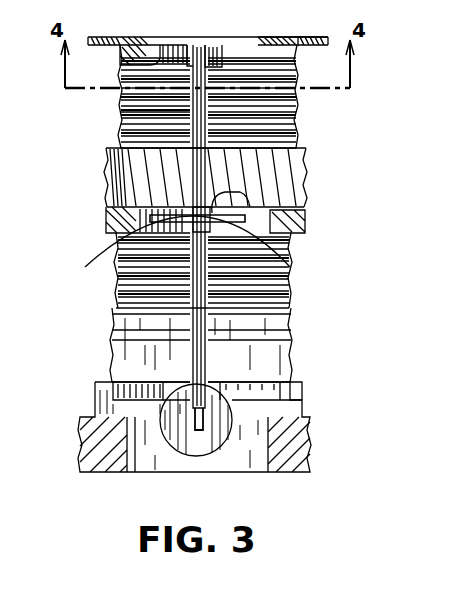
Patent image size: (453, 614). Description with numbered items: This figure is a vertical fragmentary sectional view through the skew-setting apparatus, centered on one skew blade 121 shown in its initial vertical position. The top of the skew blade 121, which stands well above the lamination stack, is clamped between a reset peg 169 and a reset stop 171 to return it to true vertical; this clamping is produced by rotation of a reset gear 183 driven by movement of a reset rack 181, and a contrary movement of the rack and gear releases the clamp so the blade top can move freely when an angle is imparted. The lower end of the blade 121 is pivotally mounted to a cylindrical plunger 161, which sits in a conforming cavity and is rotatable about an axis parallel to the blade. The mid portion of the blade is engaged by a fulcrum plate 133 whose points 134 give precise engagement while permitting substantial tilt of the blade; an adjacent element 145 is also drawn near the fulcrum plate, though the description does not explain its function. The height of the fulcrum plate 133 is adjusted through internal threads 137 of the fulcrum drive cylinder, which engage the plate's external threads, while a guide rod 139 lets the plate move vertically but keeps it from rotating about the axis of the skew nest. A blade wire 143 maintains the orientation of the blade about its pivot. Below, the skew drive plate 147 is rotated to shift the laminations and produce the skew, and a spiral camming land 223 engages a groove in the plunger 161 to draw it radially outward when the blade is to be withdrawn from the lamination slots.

The skew blade 121 is at (204, 357).
The fulcrum plate 133 is at (106, 178).
The points of fulcrum plate 134 is at (332, 243).
The internal threads 137 is at (283, 115).
The guide rod 139 is at (148, 112).
The blade wire 143 is at (175, 233).
The washer 145 is at (103, 225).
The skew drive plate 147 is at (94, 388).
The plunger 161 is at (222, 470).
The reset peg 169 is at (222, 44).
The reset stop 171 is at (187, 52).
The reset rack 181 is at (105, 37).
The reset gear 183 is at (262, 36).
The spiral camming land 223 is at (302, 400).